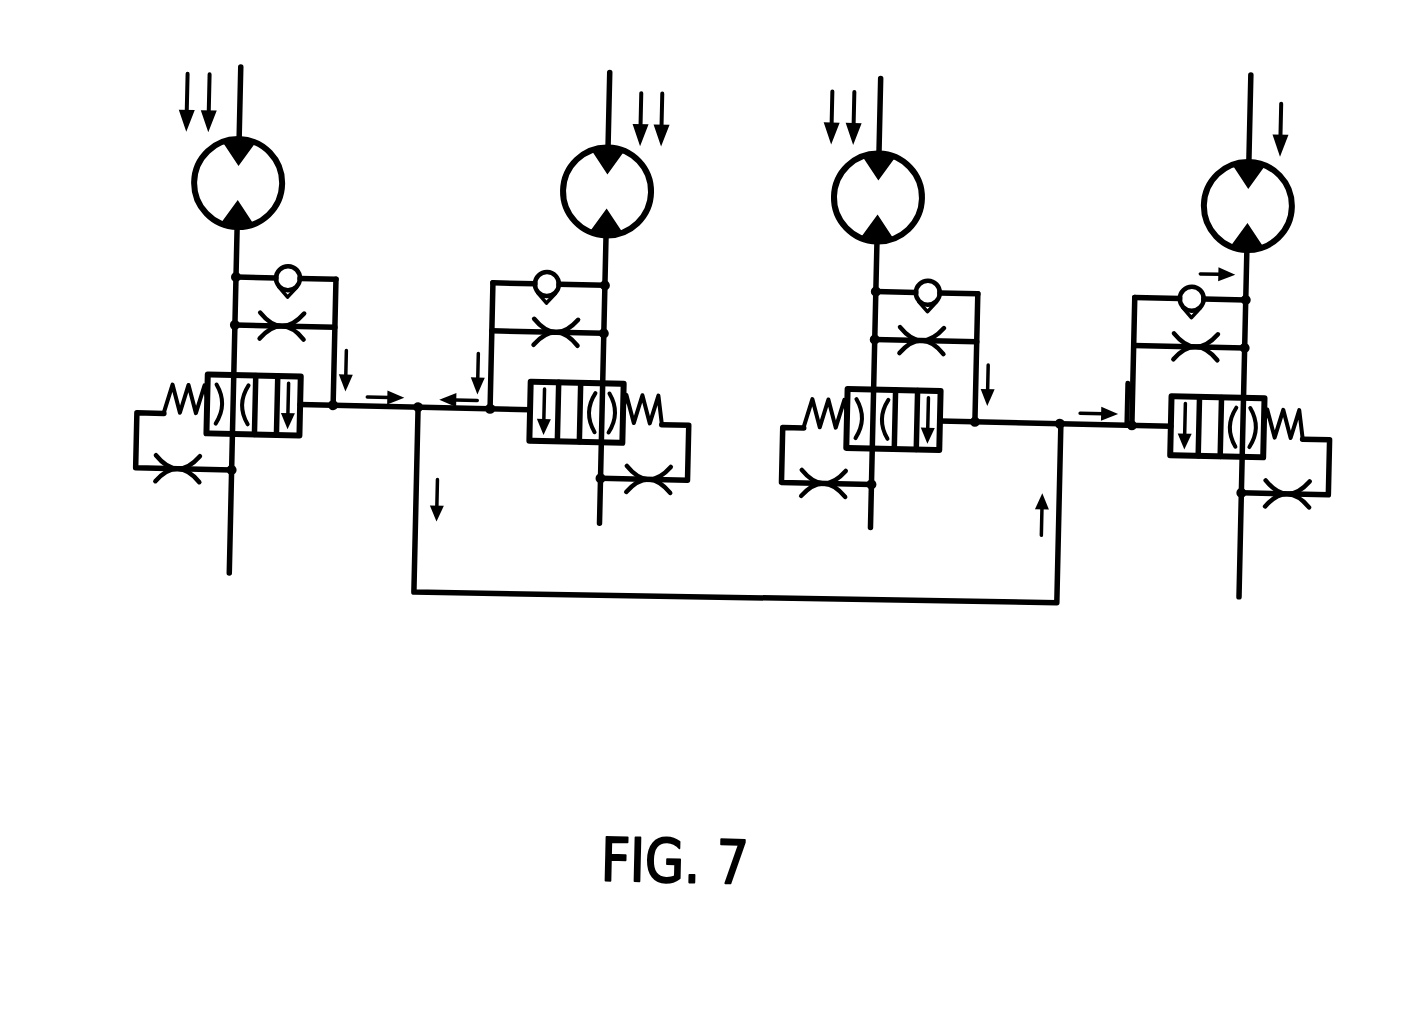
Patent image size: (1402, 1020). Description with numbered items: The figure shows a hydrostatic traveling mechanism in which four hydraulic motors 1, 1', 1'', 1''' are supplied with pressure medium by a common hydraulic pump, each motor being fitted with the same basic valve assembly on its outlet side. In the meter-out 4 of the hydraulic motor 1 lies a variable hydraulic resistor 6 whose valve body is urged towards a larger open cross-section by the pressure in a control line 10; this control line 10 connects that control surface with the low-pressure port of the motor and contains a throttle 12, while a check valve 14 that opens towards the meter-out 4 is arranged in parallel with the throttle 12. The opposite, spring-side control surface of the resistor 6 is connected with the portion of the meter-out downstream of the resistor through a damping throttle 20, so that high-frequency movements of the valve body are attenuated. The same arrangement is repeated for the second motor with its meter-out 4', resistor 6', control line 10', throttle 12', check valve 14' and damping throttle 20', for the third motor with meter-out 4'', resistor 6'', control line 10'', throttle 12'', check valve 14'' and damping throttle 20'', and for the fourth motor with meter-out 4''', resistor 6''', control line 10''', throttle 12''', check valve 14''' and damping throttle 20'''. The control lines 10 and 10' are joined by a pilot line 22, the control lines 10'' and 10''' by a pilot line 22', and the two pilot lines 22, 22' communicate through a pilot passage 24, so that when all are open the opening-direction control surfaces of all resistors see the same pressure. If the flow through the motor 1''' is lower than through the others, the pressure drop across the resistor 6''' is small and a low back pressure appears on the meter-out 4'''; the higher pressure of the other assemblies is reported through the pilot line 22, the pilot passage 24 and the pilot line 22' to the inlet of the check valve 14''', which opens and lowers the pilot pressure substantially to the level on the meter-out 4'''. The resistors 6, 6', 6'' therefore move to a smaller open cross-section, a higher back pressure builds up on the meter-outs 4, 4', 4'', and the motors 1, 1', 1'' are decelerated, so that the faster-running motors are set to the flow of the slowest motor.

The hydraulic motor 1 is at (257, 148).
The meter-out 4 is at (161, 395).
The check valve 14 is at (202, 297).
The throttle 12 is at (227, 345).
The control line 10 is at (374, 345).
The variable hydraulic resistor 6 is at (238, 457).
The damping throttle 20 is at (174, 494).
The pilot line 22 is at (414, 439).
The hydraulic motor 1' is at (648, 154).
The meter-out 4' is at (657, 380).
The check valve 14' is at (531, 257).
The throttle 12' is at (583, 348).
The control line 10' is at (460, 338).
The variable hydraulic resistor 6' is at (584, 465).
The damping throttle 20' is at (645, 504).
The hydraulic motor 1'' is at (923, 161).
The meter-out 4'' is at (960, 387).
The check valve 14'' is at (850, 336).
The throttle 12'' is at (895, 362).
The control line 10'' is at (1031, 362).
The variable hydraulic resistor 6'' is at (891, 467).
The damping throttle 20'' is at (828, 512).
The pilot line 22' is at (1054, 451).
The pilot passage 24 is at (714, 586).
The hydraulic motor 1''' is at (1294, 163).
The meter-out 4''' is at (1291, 424).
The check valve 14''' is at (1180, 274).
The throttle 12''' is at (1243, 365).
The control line 10''' is at (1126, 419).
The variable hydraulic resistor 6''' is at (1227, 485).
The damping throttle 20''' is at (1300, 523).